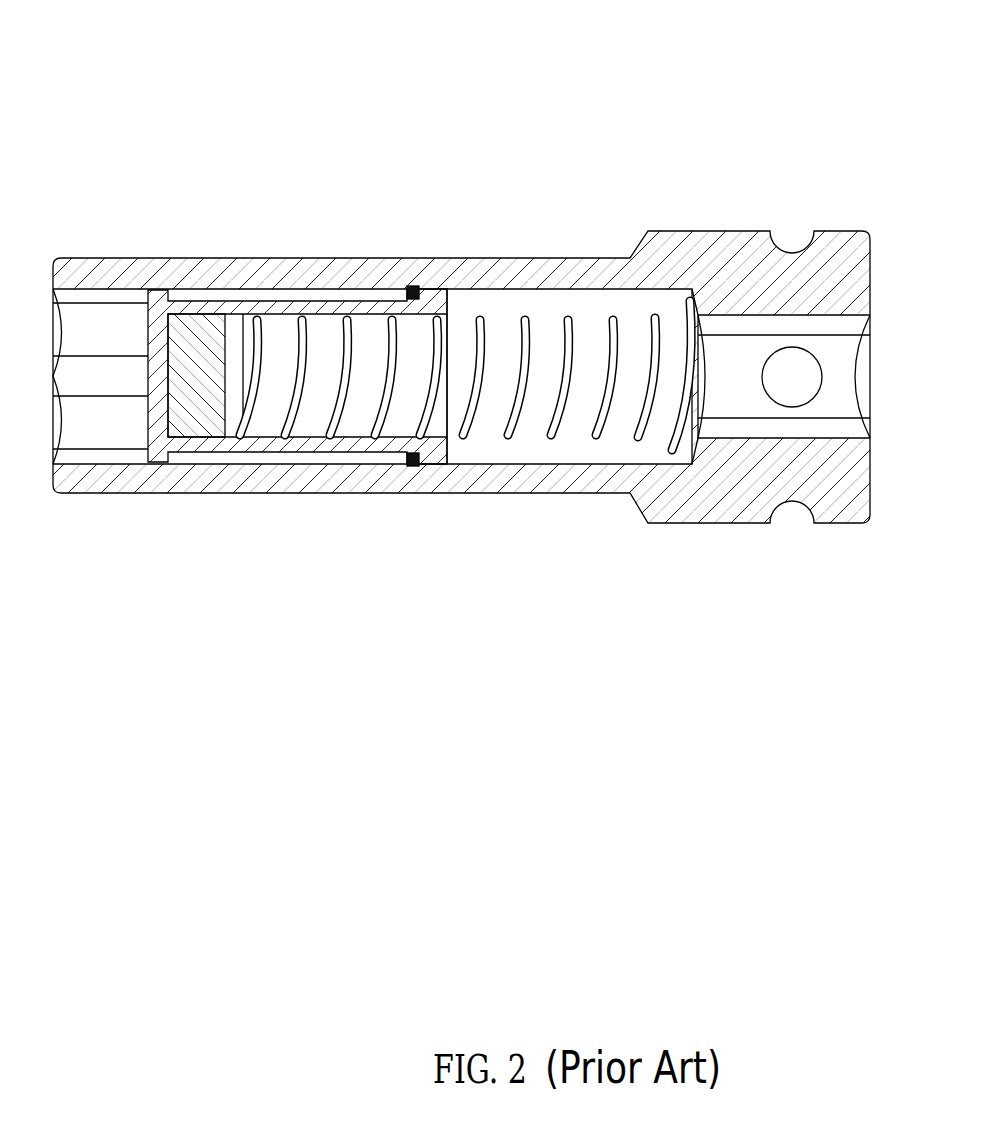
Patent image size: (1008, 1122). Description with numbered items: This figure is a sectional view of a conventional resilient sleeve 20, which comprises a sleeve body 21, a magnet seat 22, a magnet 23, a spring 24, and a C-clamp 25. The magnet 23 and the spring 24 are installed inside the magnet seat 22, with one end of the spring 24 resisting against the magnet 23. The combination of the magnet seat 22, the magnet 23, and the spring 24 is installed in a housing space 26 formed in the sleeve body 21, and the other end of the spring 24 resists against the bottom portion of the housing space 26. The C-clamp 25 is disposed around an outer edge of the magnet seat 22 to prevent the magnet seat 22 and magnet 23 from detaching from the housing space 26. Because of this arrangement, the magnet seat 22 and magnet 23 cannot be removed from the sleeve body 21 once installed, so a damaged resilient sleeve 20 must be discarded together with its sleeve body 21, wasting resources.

The resilient sleeve 20 is at (643, 47).
The sleeve body 21 is at (340, 270).
The magnet seat 22 is at (228, 284).
The magnet 23 is at (193, 321).
The spring 24 is at (524, 316).
The C-clamp 25 is at (411, 286).
The housing space 26 is at (477, 297).